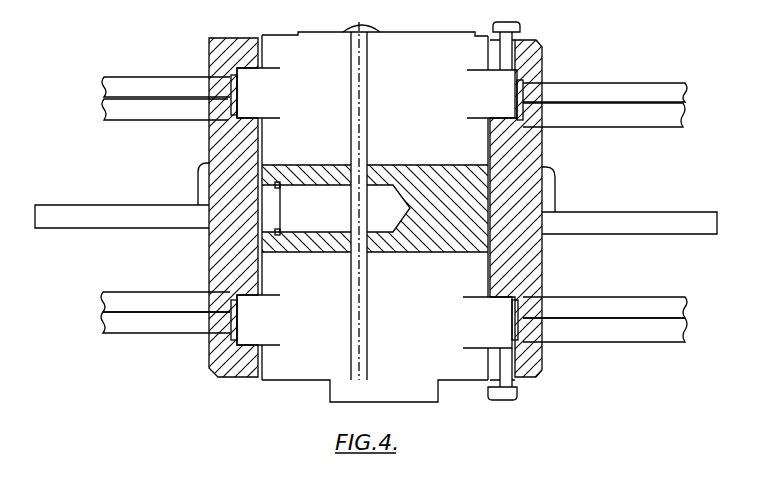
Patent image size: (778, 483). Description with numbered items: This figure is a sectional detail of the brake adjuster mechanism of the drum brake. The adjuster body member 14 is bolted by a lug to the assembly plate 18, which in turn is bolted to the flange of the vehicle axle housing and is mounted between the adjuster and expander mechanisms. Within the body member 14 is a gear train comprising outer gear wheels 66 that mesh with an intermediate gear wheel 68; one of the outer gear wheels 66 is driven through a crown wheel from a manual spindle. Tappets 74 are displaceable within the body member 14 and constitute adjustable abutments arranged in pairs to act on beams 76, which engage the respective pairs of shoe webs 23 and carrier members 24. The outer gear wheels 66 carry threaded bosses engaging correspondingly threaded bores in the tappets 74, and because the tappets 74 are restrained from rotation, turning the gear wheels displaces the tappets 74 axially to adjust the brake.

The body member 14 is at (210, 38).
The assembly plate 18 is at (698, 222).
The shoe webs 23 is at (130, 86).
The carrier members 24 is at (142, 113).
The outer gear wheels 66 is at (362, 63).
The intermediate gear wheel 68 is at (352, 147).
The tappets 74 is at (273, 100).
The beams 76 is at (244, 44).